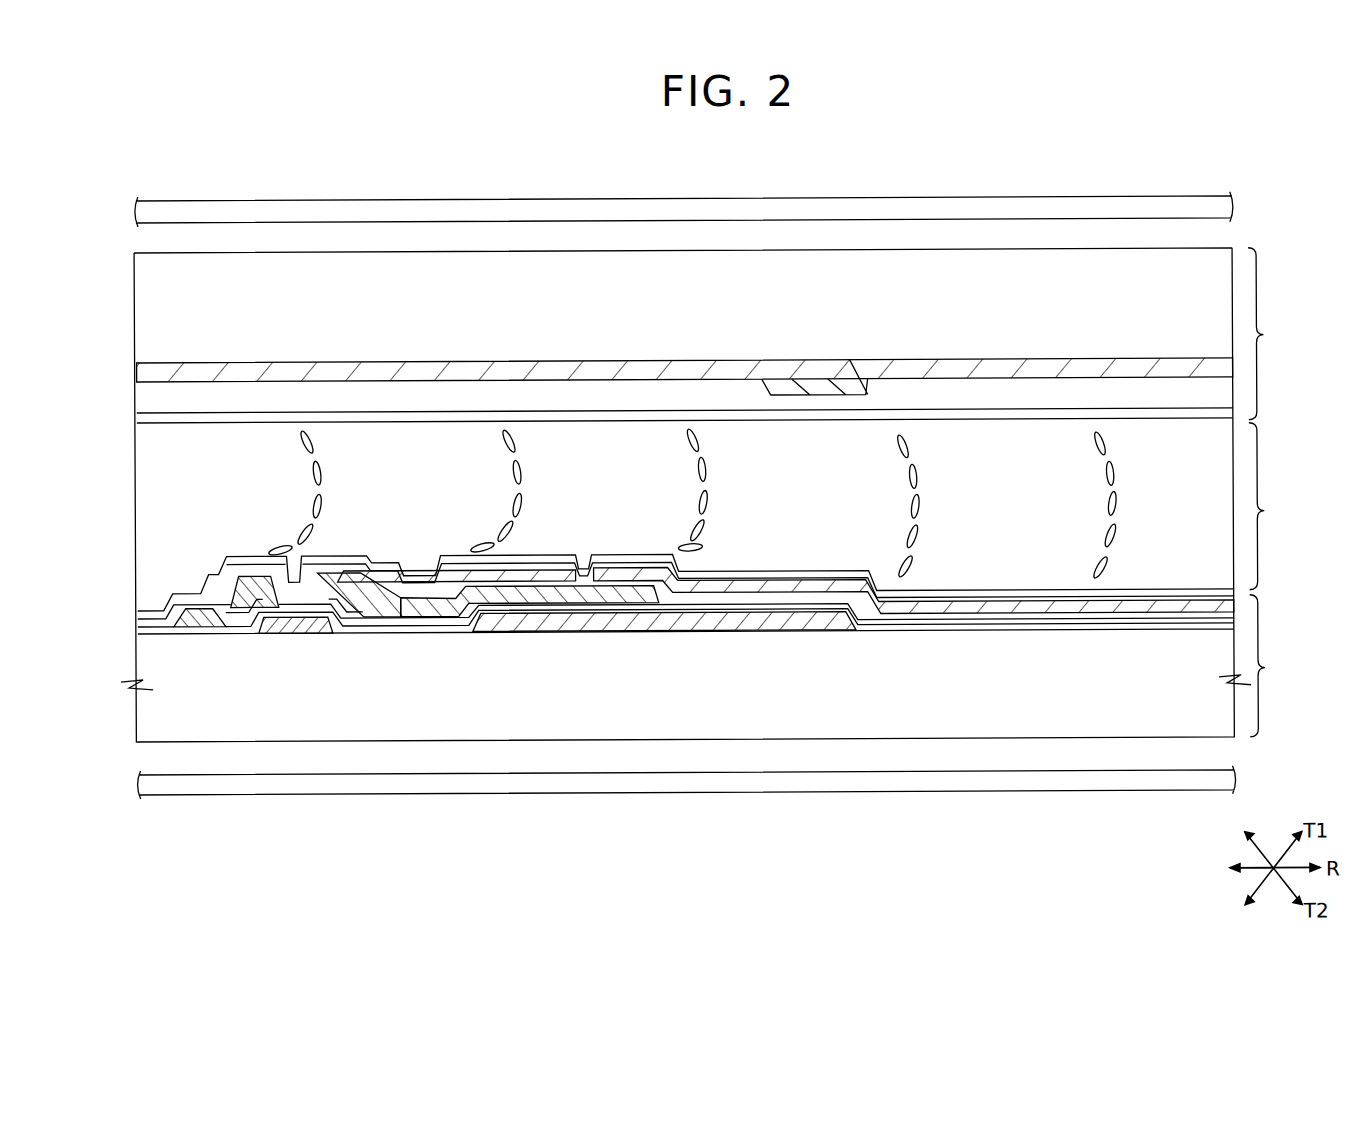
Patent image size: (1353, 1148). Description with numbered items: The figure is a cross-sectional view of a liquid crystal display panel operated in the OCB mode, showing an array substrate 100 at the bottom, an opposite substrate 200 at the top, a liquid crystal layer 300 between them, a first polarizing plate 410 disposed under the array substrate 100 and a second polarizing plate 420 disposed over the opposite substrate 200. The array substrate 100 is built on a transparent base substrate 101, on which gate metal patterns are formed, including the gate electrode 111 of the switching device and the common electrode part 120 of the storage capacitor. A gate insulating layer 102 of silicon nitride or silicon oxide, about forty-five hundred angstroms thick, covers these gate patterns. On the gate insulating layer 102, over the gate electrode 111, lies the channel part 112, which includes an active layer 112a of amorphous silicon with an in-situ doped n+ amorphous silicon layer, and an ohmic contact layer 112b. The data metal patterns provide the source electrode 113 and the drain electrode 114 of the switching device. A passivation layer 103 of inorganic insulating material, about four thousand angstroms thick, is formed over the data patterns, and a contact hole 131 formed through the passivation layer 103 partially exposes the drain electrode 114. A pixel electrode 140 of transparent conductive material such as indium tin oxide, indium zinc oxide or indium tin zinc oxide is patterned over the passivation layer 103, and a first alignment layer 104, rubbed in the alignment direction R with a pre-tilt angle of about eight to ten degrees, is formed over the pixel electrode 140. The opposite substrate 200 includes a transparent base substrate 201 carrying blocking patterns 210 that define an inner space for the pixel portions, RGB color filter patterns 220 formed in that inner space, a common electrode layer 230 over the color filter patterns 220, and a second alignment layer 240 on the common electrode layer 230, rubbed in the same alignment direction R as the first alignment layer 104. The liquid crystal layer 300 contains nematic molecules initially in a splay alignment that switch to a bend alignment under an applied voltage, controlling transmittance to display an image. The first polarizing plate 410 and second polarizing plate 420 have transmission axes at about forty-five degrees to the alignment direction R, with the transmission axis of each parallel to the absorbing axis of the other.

The array substrate 100 is at (1278, 665).
The base substrate 101 is at (145, 706).
The gate insulating layer 102 is at (140, 630).
The passivation layer 103 is at (140, 620).
The first alignment layer 104 is at (140, 612).
The gate electrode 111 is at (296, 634).
The channel part 112 is at (298, 750).
The active layer 112a is at (248, 632).
The ohmic contact layer 112b is at (343, 632).
The source electrode 113 is at (207, 632).
The drain electrode 114 is at (383, 632).
The common electrode part 120 is at (641, 634).
The contact hole 131 is at (415, 600).
The pixel electrode 140 is at (778, 590).
The opposite substrate 200 is at (1276, 333).
The base substrate 201 is at (145, 308).
The blocking patterns 210 is at (147, 371).
The color filter patterns 220 is at (1040, 370).
The common electrode layer 230 is at (147, 411).
The second alignment layer 240 is at (147, 422).
The liquid crystal layer 300 is at (785, 508).
The first polarizing plate 410 is at (1235, 782).
The second polarizing plate 420 is at (1235, 210).